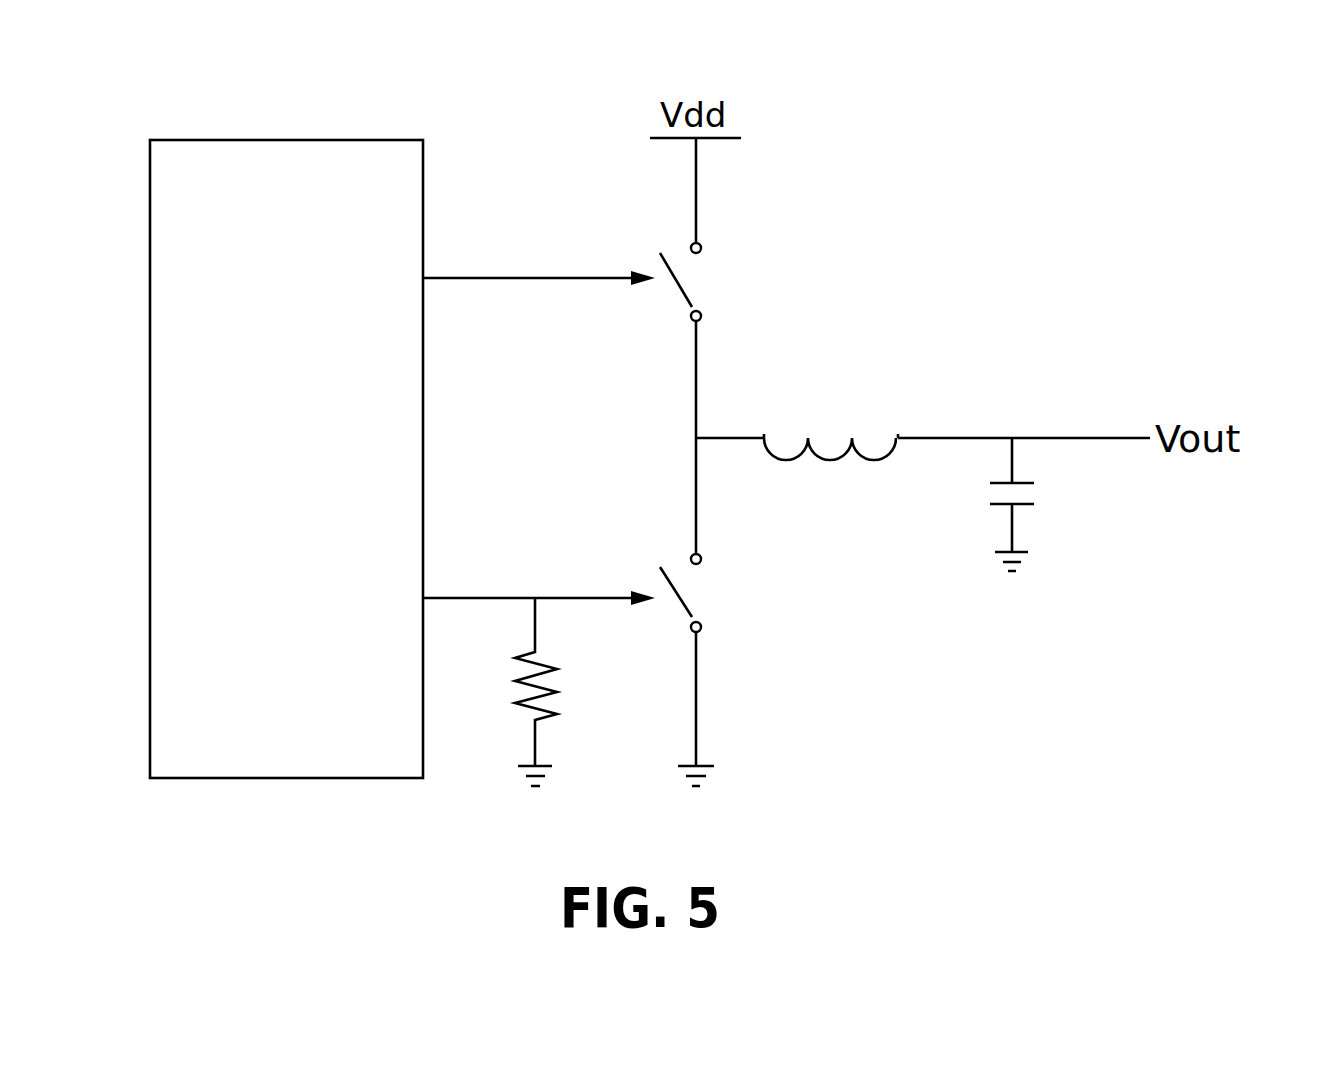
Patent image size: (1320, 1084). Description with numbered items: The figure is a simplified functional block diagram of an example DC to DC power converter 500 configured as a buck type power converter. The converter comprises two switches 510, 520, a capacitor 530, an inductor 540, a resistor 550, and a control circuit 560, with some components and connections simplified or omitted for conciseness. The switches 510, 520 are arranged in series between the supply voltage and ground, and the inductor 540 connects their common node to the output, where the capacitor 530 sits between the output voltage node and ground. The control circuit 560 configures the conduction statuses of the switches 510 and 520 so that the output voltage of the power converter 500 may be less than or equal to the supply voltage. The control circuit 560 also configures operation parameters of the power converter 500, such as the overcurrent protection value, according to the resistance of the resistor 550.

The DC to DC power converter 500 is at (1150, 138).
The switch 510 is at (720, 275).
The switch 520 is at (707, 597).
The capacitor 530 is at (1063, 500).
The inductor 540 is at (833, 425).
The resistor 550 is at (578, 688).
The control circuit 560 is at (423, 208).